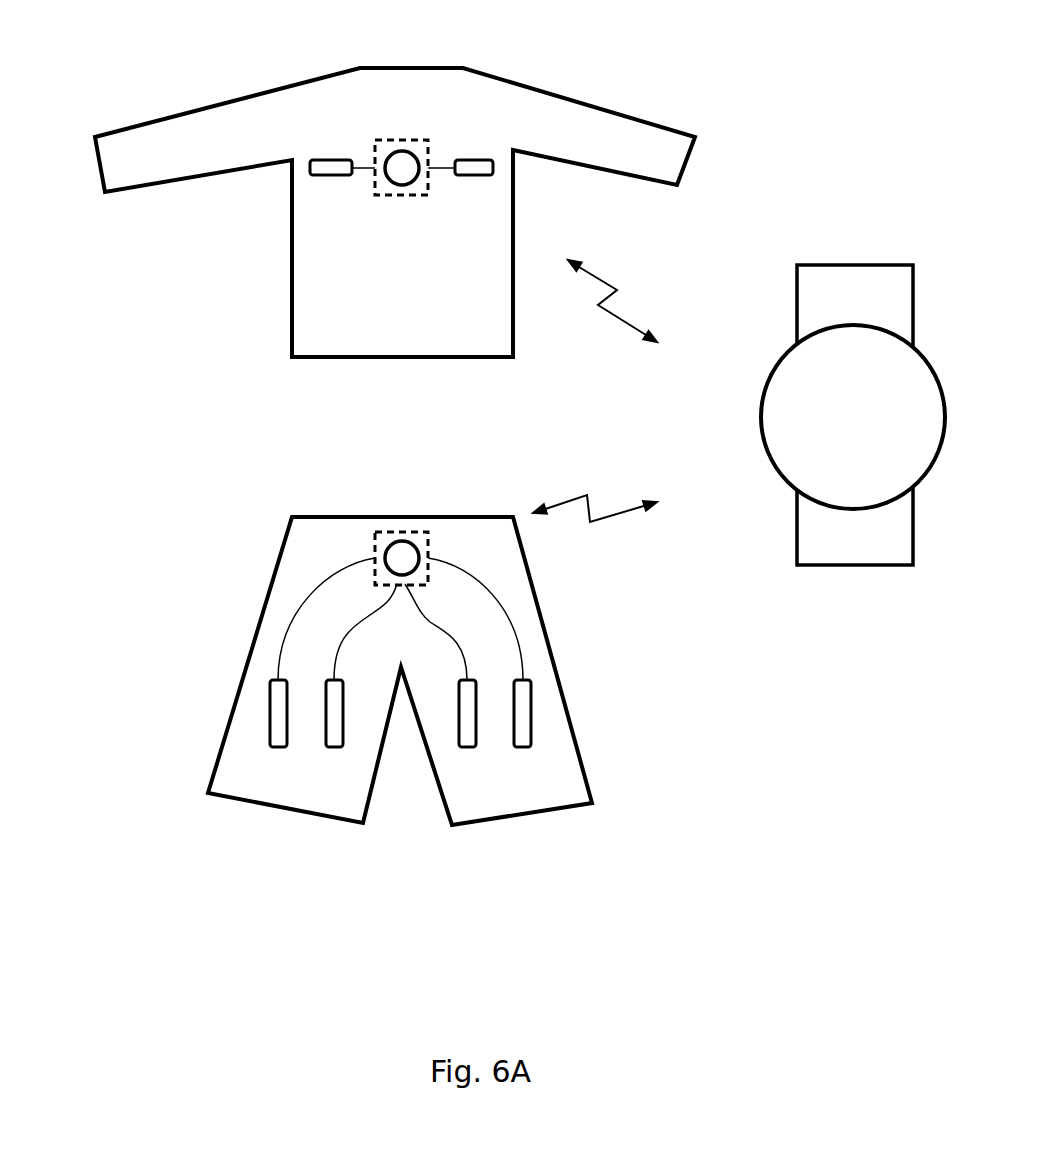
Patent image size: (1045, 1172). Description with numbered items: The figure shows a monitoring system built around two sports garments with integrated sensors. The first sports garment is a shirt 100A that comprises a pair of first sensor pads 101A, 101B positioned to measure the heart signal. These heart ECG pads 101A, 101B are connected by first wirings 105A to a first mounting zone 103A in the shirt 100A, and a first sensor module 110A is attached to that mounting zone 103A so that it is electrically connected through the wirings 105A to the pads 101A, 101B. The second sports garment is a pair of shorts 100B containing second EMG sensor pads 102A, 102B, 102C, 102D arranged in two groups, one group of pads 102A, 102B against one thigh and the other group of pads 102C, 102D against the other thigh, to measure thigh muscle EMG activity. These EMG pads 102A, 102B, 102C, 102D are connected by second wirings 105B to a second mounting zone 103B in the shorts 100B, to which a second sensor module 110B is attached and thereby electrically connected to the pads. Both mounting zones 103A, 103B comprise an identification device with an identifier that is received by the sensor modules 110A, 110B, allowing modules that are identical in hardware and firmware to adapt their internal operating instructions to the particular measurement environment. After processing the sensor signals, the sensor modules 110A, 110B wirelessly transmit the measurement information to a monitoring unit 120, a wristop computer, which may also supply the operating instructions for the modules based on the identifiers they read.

The first sports garment (shirt) 100A is at (721, 149).
The first sensor pad 101A is at (310, 165).
The first sensor pad 101B is at (475, 160).
The first mounting zone 103A is at (402, 140).
The first sensor module 110A is at (428, 167).
The first wirings 105A is at (340, 176).
The monitoring unit (wristop computer) 120 is at (762, 345).
The second sports garment (shorts) 100B is at (642, 774).
The second mounting zone 103B is at (400, 532).
The second sensor module 110B is at (415, 532).
The second wirings 105B is at (297, 608).
The second EMG sensor pad 102A is at (268, 713).
The second EMG sensor pad 102B is at (334, 747).
The second EMG sensor pad 102C is at (705, 699).
The second EMG sensor pad 102D is at (467, 747).